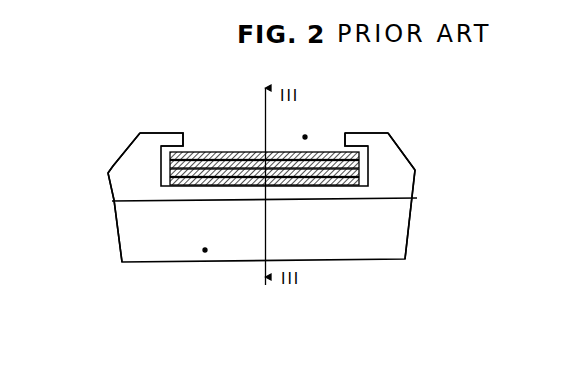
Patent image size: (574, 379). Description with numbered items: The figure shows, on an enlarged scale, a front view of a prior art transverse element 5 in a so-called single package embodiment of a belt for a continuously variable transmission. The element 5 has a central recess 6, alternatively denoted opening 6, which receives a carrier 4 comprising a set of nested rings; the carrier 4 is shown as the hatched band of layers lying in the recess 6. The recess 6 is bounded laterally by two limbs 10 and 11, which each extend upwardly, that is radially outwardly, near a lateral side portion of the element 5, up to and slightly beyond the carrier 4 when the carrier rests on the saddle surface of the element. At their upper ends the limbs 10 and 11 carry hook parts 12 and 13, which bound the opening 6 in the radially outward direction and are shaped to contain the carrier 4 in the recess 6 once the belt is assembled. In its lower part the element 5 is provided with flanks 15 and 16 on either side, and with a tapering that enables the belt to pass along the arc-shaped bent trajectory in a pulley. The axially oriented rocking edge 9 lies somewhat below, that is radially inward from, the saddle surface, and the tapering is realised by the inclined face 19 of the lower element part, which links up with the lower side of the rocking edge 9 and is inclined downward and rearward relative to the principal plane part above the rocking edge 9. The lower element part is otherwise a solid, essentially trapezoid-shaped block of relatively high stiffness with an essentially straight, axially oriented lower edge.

The carrier 4 is at (243, 151).
The transverse element 5 is at (235, 323).
The central recess 6 is at (305, 137).
The rocking edge 9 is at (380, 202).
The limb 10 is at (128, 172).
The limb 11 is at (397, 165).
The hook part 12 is at (163, 133).
The hook part 13 is at (358, 134).
The flank 15 is at (407, 248).
The flank 16 is at (118, 230).
The inclined face 19 is at (205, 250).